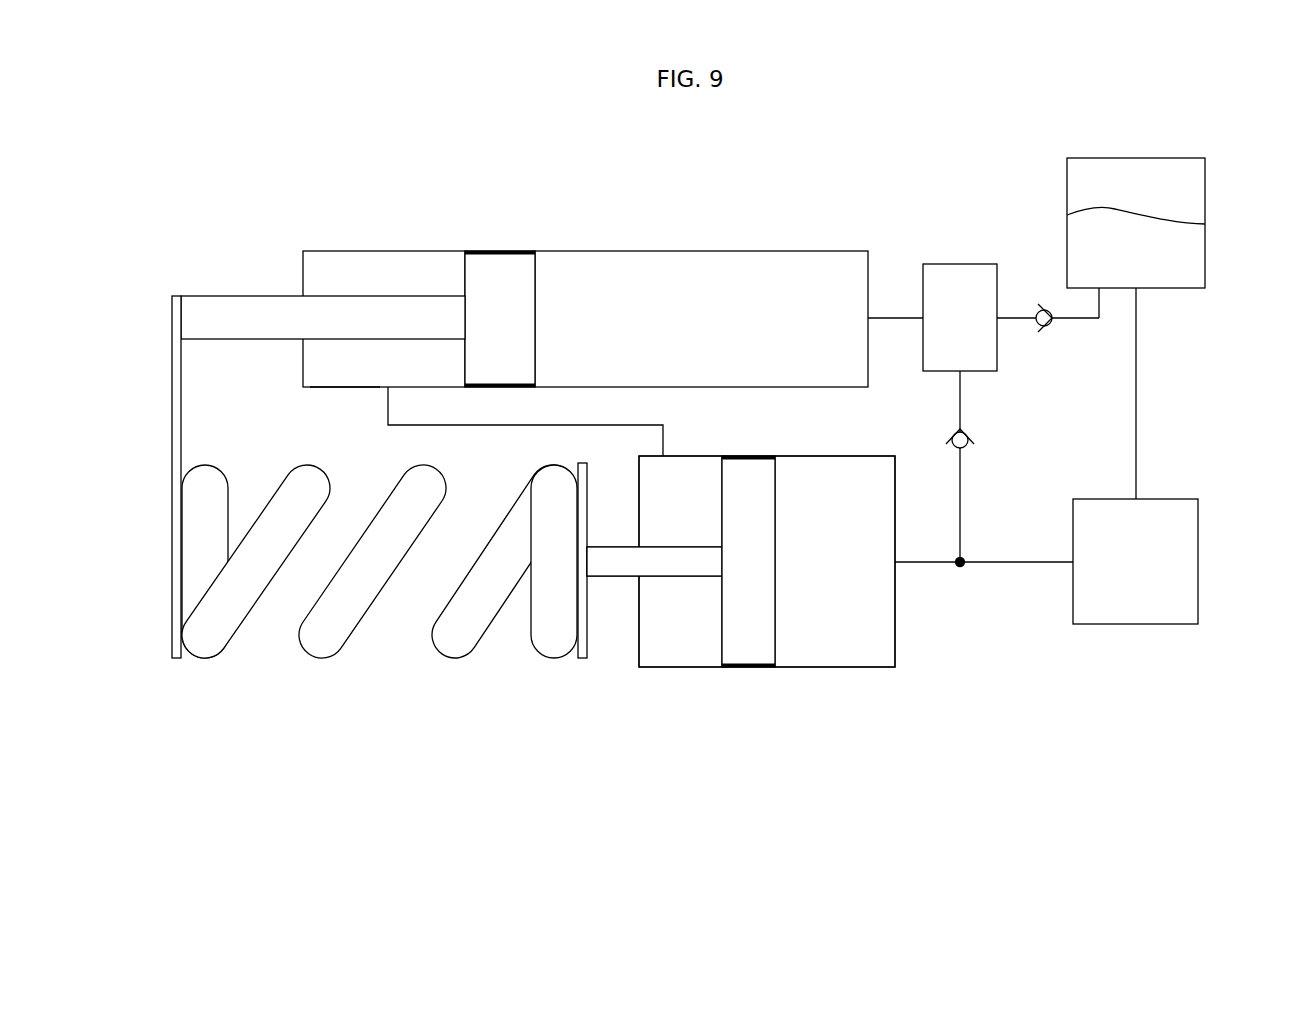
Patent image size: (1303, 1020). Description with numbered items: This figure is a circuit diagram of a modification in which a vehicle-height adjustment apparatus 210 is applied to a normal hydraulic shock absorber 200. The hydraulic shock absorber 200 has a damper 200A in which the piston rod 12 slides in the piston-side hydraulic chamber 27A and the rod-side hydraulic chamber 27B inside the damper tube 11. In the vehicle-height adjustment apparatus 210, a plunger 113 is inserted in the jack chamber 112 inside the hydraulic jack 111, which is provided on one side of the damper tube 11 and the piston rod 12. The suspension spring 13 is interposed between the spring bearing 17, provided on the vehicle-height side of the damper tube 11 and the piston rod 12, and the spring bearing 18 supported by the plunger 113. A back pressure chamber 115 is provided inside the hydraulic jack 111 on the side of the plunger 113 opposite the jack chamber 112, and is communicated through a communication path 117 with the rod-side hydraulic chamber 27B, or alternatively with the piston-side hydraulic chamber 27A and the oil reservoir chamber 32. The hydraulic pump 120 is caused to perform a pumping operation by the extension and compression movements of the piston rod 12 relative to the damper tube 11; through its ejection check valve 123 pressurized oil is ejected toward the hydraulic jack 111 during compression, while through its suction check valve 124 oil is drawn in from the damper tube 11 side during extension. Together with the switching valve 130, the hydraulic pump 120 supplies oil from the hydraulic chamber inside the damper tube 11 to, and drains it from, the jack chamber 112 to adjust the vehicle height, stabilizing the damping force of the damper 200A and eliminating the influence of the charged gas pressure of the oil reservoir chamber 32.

The damper tube 11 is at (323, 249).
The piston rod 12 is at (232, 295).
The suspension spring 13 is at (455, 660).
The spring bearing 17 is at (167, 655).
The spring bearing 18 is at (590, 637).
The piston-side hydraulic chamber 27A is at (690, 262).
The rod-side hydraulic chamber 27B is at (447, 262).
The oil reservoir chamber 32 is at (1198, 253).
The hydraulic jack 111 is at (803, 668).
The jack chamber 112 is at (863, 636).
The plunger 113 is at (748, 636).
The back pressure chamber 115 is at (678, 636).
The communication path 117 is at (672, 425).
The hydraulic pump 120 is at (958, 263).
The ejection check valve 123 is at (968, 448).
The suction check valve 124 is at (1042, 328).
The switching valve 130 is at (1138, 627).
The hydraulic shock absorber 200 is at (388, 240).
The damper 200A is at (345, 392).
The vehicle-height adjustment apparatus 210 is at (343, 700).